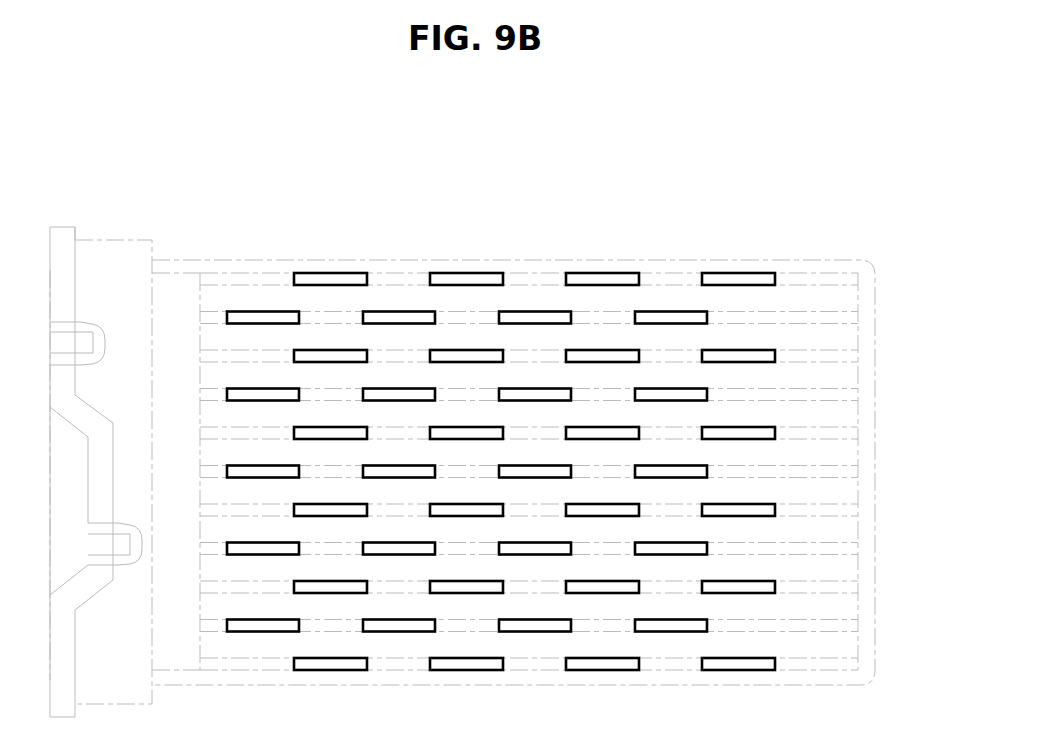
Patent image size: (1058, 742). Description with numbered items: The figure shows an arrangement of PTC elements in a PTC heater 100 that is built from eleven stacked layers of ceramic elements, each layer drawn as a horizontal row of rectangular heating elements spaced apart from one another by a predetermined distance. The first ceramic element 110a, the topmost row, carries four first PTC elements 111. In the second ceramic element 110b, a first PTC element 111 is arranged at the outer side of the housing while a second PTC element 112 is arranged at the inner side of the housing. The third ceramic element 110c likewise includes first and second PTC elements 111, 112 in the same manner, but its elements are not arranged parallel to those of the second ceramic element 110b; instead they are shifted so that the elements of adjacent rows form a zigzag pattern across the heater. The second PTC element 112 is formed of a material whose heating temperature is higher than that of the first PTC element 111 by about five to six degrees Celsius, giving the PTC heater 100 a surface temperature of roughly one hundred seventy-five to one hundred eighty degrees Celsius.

The PTC heater 100 is at (545, 138).
The first PTC element 111 is at (333, 283).
The second PTC element 112 is at (405, 320).
The first ceramic element 110a is at (880, 271).
The second ceramic element 110b is at (880, 309).
The third ceramic element 110c is at (880, 348).